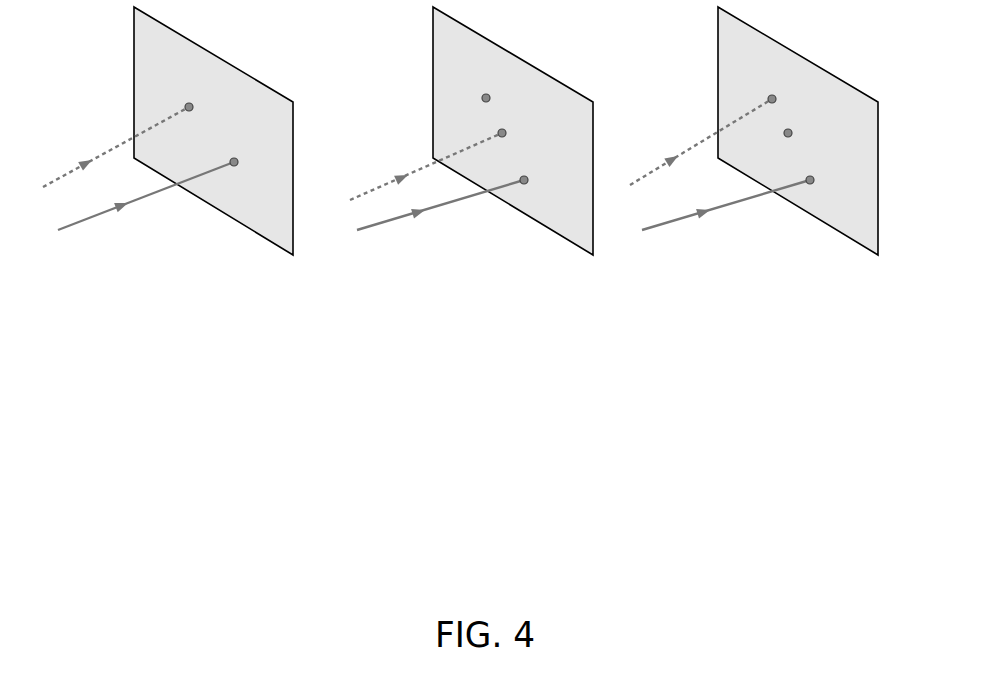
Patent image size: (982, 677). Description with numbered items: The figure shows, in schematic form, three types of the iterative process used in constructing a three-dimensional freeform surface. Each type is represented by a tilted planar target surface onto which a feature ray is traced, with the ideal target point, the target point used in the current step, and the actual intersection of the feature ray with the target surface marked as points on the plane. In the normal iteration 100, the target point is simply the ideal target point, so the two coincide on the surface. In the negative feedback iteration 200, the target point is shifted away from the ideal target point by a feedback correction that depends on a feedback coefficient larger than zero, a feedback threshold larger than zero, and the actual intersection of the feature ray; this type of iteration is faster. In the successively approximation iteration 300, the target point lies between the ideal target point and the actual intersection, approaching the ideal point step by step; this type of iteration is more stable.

The normal iteration 100 is at (228, 260).
The negative feedback iteration 200 is at (515, 264).
The successively approximation iteration 300 is at (792, 259).